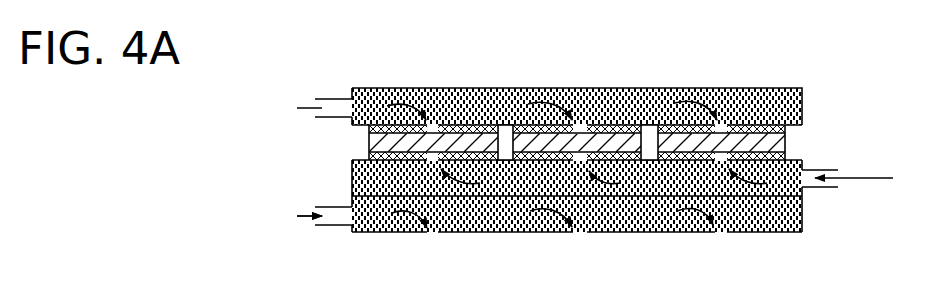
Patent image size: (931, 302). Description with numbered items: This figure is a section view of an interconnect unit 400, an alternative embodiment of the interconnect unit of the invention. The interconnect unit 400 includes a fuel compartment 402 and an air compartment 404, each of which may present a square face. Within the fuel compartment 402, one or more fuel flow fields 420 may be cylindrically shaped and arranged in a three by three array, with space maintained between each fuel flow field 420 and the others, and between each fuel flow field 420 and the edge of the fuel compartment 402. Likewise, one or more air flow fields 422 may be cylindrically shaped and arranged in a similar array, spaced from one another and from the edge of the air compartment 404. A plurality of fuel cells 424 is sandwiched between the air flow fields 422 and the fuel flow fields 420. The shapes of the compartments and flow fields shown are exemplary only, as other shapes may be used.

The interconnect unit 400 is at (711, 73).
The fuel compartment 402 is at (787, 178).
The air compartment 404 is at (460, 104).
The fuel flow field 420 is at (368, 131).
The air flow field 422 is at (784, 156).
The fuel cell 424 is at (778, 146).